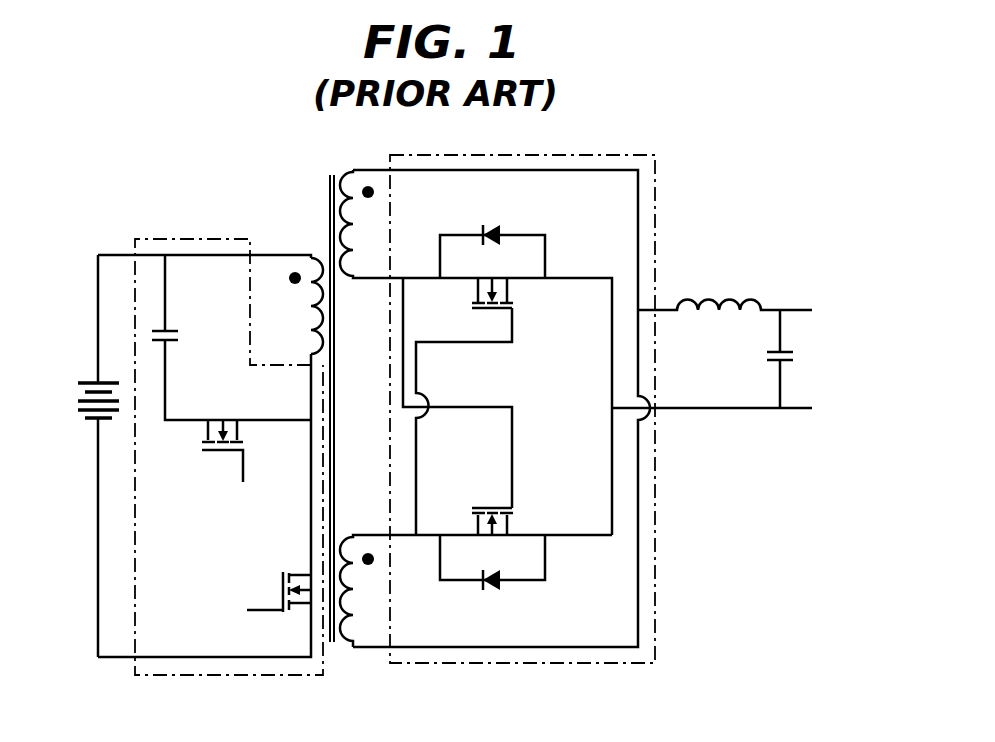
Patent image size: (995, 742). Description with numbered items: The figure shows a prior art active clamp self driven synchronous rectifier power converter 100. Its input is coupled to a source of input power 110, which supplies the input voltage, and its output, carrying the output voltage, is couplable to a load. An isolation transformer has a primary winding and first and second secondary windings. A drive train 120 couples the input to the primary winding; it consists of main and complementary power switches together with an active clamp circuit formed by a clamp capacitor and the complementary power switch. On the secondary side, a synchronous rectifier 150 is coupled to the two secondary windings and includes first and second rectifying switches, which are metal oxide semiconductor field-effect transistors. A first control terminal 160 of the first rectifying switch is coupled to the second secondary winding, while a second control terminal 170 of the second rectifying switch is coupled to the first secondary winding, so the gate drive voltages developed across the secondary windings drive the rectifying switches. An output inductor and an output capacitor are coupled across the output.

The power converter 100 is at (252, 186).
The source of input power 110 is at (97, 421).
The drive train 120 is at (173, 238).
The synchronous rectifier 150 is at (658, 503).
The first control terminal 160 is at (513, 316).
The second control terminal 170 is at (513, 445).